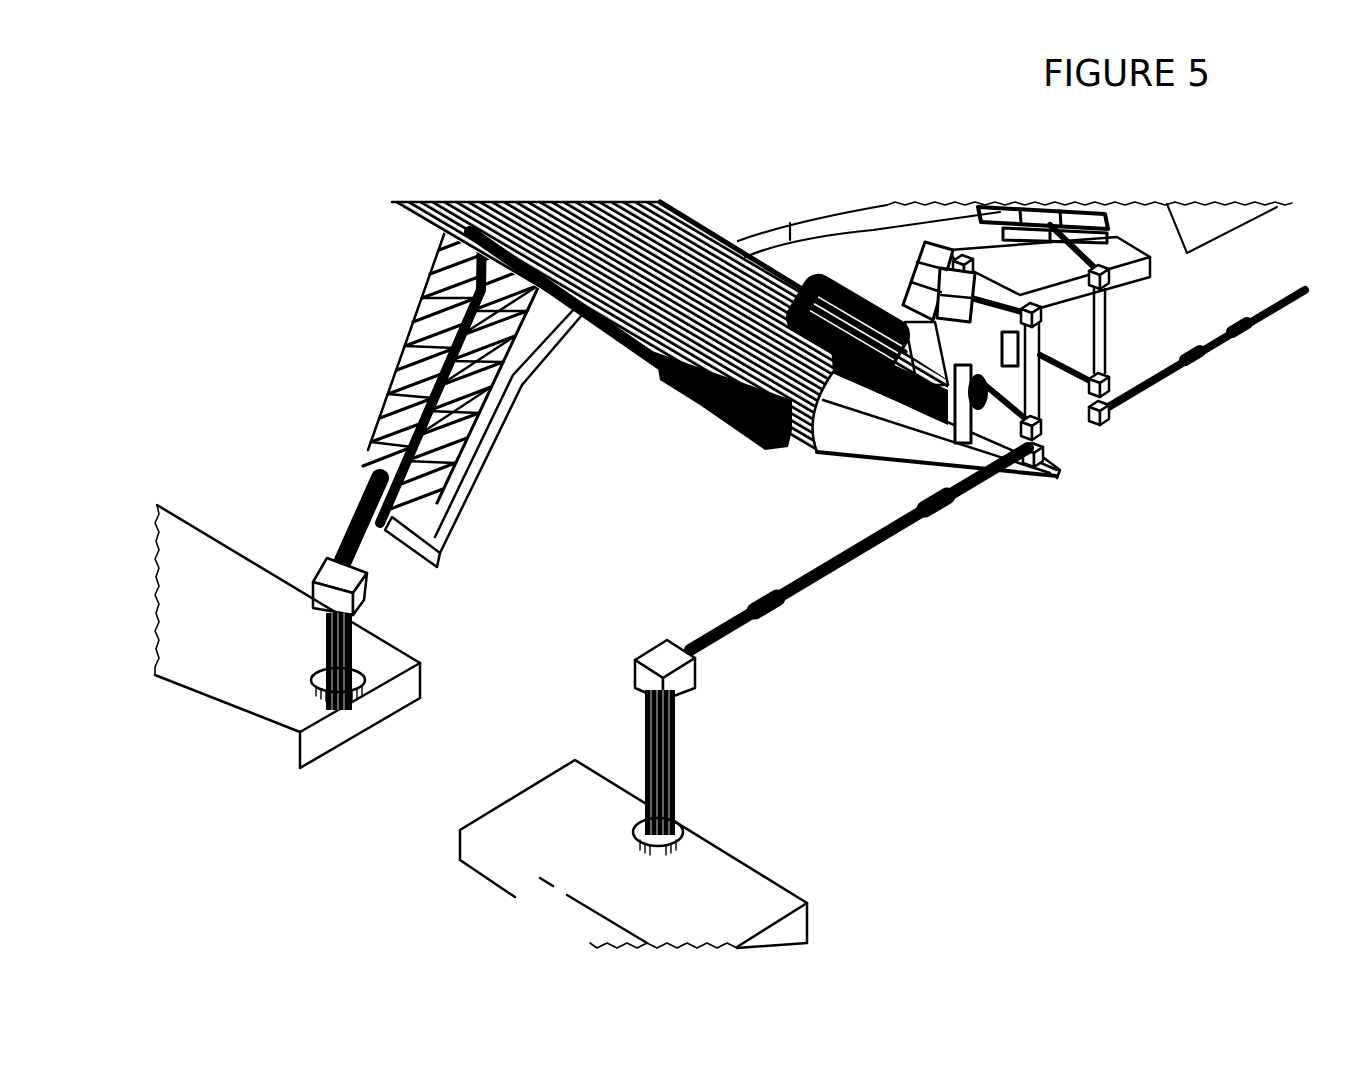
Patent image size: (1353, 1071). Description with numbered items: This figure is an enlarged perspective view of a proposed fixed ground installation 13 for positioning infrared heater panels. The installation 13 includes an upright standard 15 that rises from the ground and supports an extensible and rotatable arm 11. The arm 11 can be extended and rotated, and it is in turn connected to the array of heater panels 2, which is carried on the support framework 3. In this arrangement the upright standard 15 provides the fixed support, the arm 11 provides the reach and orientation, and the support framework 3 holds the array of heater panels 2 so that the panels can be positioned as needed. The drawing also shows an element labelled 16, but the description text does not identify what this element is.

The array of heater panels 2 is at (393, 353).
The support framework 3 is at (447, 418).
The extensible and rotatable arm 11 is at (360, 523).
The fixed ground installation 13 is at (403, 697).
The upright standard 15 is at (343, 633).
The frame 16 is at (1103, 330).